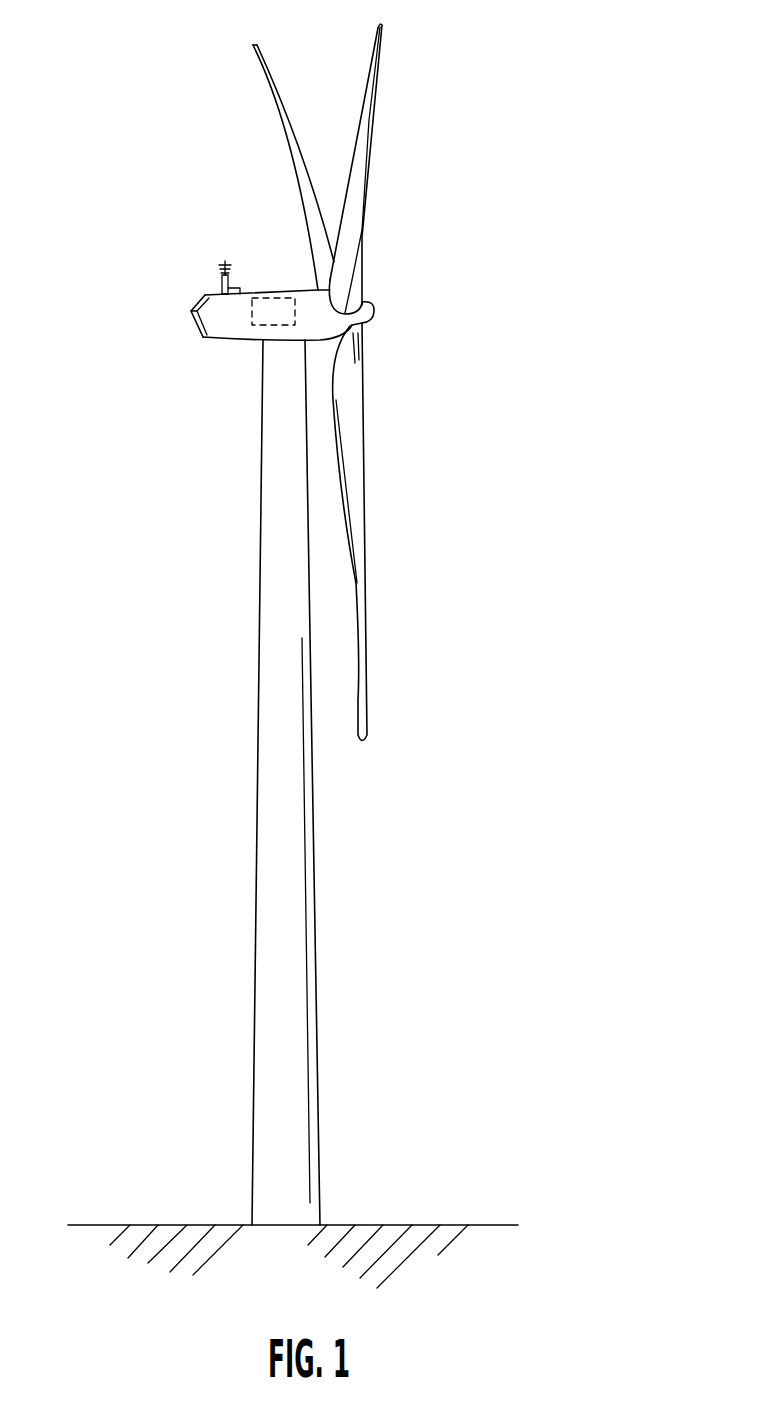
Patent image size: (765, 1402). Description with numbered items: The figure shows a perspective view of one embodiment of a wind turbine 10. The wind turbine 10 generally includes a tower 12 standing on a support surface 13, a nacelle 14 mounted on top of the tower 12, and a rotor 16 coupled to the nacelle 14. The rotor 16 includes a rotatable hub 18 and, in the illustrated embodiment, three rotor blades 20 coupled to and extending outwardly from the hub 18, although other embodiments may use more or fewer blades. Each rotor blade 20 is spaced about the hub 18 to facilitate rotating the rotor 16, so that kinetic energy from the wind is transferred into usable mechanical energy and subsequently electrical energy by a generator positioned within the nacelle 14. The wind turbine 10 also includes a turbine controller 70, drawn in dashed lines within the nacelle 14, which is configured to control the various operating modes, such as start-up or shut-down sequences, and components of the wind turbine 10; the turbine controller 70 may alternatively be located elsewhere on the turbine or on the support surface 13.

The wind turbine 10 is at (488, 110).
The tower 12 is at (268, 895).
The support surface 13 is at (368, 1225).
The nacelle 14 is at (238, 340).
The rotor 16 is at (375, 285).
The rotatable hub 18 is at (373, 318).
The rotor blade 20 is at (370, 78).
The turbine controller 70 is at (278, 298).